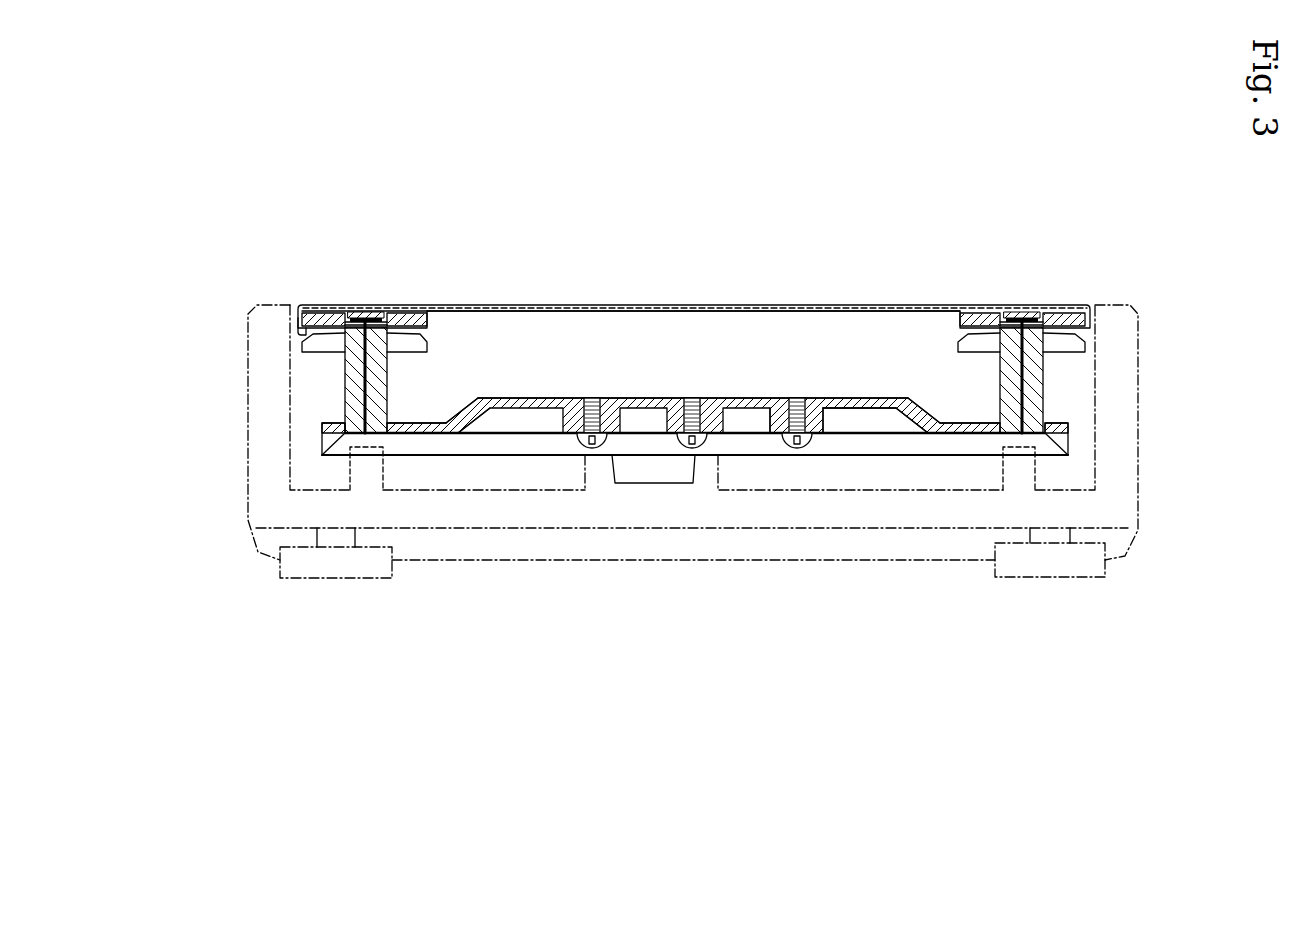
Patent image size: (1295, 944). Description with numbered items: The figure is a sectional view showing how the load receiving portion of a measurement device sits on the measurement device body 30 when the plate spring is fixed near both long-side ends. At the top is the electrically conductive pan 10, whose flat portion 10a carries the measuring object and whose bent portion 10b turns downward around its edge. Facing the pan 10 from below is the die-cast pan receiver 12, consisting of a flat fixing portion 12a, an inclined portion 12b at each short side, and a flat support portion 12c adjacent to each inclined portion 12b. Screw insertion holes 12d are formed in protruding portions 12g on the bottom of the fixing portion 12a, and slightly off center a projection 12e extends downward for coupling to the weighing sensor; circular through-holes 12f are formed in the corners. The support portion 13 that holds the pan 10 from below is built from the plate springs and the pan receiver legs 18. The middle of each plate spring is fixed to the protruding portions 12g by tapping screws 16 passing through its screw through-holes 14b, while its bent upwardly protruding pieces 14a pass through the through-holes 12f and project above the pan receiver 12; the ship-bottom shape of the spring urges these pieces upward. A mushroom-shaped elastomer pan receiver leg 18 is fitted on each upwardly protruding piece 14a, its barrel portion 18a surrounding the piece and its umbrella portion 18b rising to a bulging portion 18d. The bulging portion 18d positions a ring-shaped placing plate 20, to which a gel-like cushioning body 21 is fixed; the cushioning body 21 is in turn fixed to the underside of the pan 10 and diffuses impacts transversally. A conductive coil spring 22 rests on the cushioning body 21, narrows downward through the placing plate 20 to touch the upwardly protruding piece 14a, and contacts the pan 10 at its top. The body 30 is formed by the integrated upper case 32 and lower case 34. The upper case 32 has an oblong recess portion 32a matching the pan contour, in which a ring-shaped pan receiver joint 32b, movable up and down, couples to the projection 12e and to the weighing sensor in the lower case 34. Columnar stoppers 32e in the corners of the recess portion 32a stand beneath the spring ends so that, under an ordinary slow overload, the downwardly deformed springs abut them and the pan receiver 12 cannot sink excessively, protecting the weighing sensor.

The pan 10 is at (585, 303).
The flat portion 10a is at (712, 305).
The bent portion 10b is at (298, 322).
The pan receiver 12 is at (839, 396).
The fixing portion 12a is at (660, 398).
The inclined portion 12b is at (465, 403).
The support portion 12c is at (425, 423).
The screw insertion hole 12d is at (797, 398).
The projection 12e is at (648, 484).
The through-hole 12f is at (356, 455).
The protruding portion 12g is at (830, 418).
The support portion 13 is at (470, 456).
The upwardly protruding piece 14a is at (338, 423).
The screw through-hole 14b is at (600, 400).
The tapping screw 16 is at (790, 448).
The pan receiver leg 18 is at (343, 378).
The barrel portion 18a is at (345, 398).
The umbrella portion 18b is at (302, 348).
The bulging portion 18d is at (392, 318).
The placing plate 20 is at (428, 322).
The gel-like cushioning body 21 is at (318, 313).
The coil spring 22 is at (358, 314).
The measurement device body 30 is at (245, 494).
The upper case 32 is at (1138, 422).
The recess portion 32a is at (912, 478).
The pan receiver joint 32b is at (584, 473).
The stopper 32e is at (383, 473).
The lower case 34 is at (1138, 514).